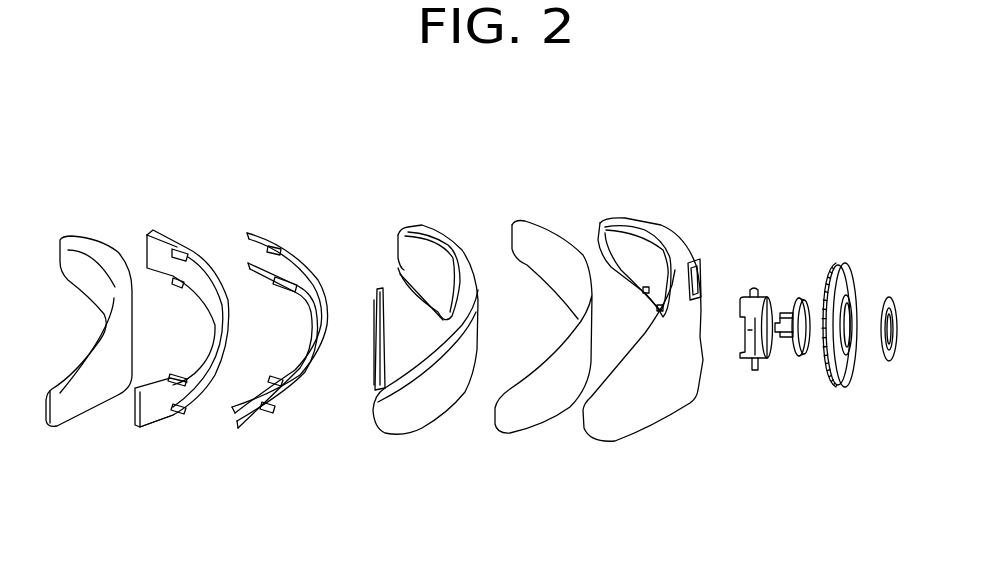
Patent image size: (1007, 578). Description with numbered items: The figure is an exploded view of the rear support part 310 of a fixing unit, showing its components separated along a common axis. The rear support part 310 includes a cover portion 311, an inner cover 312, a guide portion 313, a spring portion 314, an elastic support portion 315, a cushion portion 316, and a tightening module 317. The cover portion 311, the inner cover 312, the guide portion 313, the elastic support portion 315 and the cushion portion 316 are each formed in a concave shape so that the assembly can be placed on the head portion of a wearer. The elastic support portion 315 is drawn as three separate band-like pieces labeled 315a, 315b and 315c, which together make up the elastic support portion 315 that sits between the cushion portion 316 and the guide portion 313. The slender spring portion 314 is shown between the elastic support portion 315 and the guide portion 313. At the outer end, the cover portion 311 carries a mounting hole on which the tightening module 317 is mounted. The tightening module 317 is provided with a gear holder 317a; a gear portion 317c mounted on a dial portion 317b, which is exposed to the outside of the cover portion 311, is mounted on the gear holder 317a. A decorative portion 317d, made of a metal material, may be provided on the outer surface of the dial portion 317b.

The rear support part 310 is at (467, 146).
The cover portion 311 is at (620, 420).
The inner cover 312 is at (522, 420).
The guide portion 313 is at (416, 420).
The spring portion 314 is at (373, 390).
The elastic support portion 315 is at (133, 516).
The first band member 315a is at (154, 407).
The second band member 315b is at (229, 440).
The third band member 315c is at (269, 438).
The cushion portion 316 is at (66, 412).
The tightening module 317 is at (707, 467).
The gear holder 317a is at (750, 370).
The dial portion 317b is at (846, 387).
The gear portion 317c is at (785, 338).
The decorative portion 317d is at (890, 361).